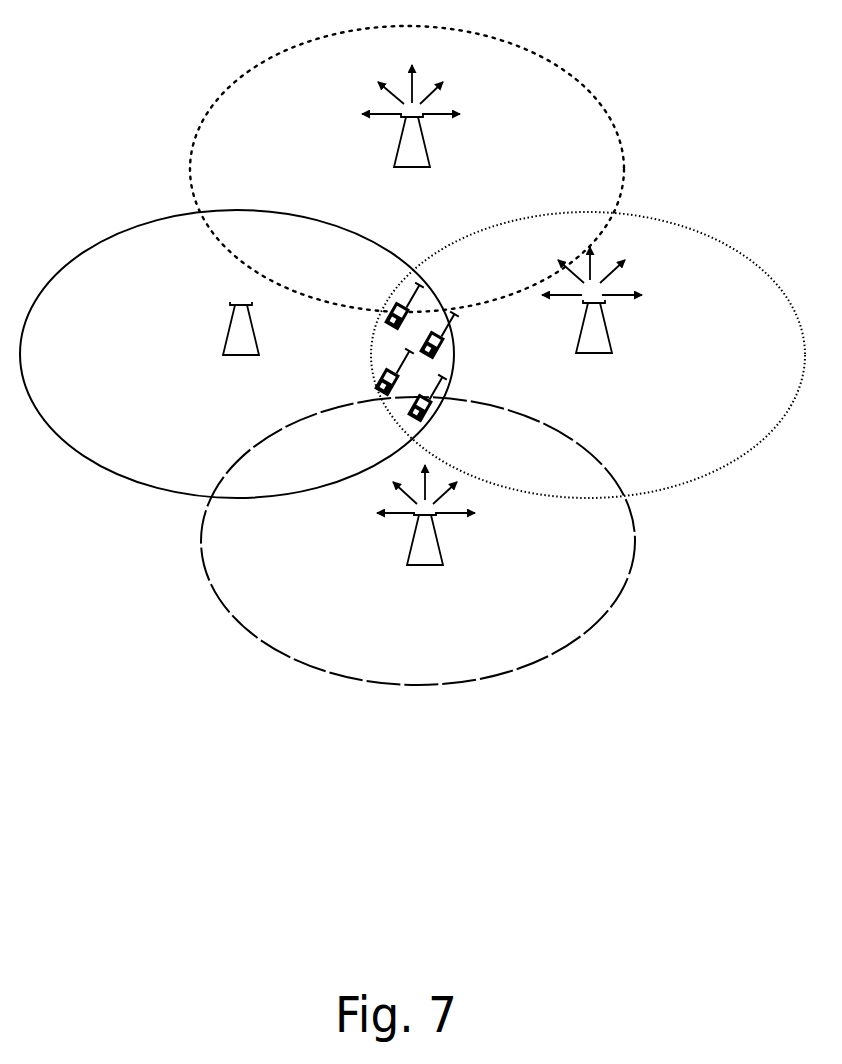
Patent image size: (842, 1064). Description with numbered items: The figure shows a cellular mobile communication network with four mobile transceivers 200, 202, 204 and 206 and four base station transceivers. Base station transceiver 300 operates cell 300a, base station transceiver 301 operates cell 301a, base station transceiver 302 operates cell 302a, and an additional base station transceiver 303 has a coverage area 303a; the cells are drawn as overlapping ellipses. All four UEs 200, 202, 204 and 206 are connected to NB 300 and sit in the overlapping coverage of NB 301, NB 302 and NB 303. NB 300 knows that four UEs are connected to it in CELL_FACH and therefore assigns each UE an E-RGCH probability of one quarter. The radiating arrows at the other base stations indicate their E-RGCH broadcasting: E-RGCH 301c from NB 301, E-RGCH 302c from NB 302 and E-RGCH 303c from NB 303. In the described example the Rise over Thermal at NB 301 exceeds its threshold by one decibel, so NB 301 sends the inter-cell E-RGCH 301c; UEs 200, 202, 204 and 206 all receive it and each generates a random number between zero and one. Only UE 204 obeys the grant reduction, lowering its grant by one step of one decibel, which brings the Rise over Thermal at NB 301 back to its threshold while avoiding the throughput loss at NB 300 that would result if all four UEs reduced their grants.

The mobile transceiver 200 is at (447, 337).
The mobile transceiver 202 is at (370, 380).
The mobile transceiver 204 is at (440, 413).
The mobile transceiver 206 is at (375, 320).
The base station transceiver 300 is at (245, 350).
The cell 300a is at (97, 243).
The base station transceiver 301 is at (600, 345).
The cell 301a is at (657, 213).
The E-RGCH broadcast 301c is at (632, 278).
The base station transceiver 302 is at (427, 163).
The cell 302a is at (598, 103).
The E-RGCH broadcast 302c is at (452, 98).
The base station transceiver 303 is at (428, 558).
The coverage area 303a is at (592, 625).
The E-RGCH broadcast 303c is at (457, 495).